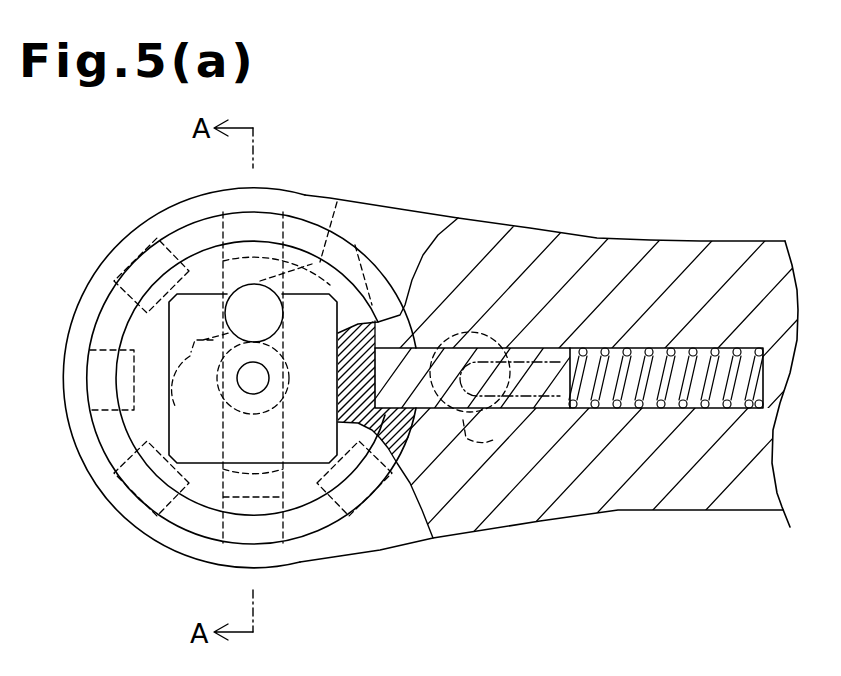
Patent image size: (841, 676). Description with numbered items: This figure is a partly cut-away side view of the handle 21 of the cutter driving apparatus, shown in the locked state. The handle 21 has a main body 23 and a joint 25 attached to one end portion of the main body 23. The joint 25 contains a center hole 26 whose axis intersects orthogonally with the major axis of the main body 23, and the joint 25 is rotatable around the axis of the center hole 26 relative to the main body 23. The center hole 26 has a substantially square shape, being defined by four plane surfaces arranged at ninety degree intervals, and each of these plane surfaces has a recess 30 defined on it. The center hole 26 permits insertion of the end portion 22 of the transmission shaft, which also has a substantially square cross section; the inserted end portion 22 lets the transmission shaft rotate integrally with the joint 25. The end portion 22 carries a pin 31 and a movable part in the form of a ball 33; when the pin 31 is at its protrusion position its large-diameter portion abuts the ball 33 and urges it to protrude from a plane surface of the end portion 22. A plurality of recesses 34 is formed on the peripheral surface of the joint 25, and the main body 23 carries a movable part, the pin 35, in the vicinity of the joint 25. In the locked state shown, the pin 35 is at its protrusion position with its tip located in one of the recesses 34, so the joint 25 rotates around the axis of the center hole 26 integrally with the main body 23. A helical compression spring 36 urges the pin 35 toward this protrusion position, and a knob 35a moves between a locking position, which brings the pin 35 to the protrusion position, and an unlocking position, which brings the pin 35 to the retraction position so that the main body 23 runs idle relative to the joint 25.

The handle 21 is at (752, 231).
The end portion of the transmission shaft 22 is at (172, 424).
The main body 23 is at (668, 256).
The joint 25 is at (192, 262).
The center hole 26 is at (168, 322).
The recess 30 is at (337, 202).
The pin 31 is at (247, 390).
The ball 33 is at (227, 346).
The recesses 34 is at (366, 380).
The pin 35 is at (428, 348).
The knob 35a is at (495, 436).
The helical compression spring 36 is at (705, 396).